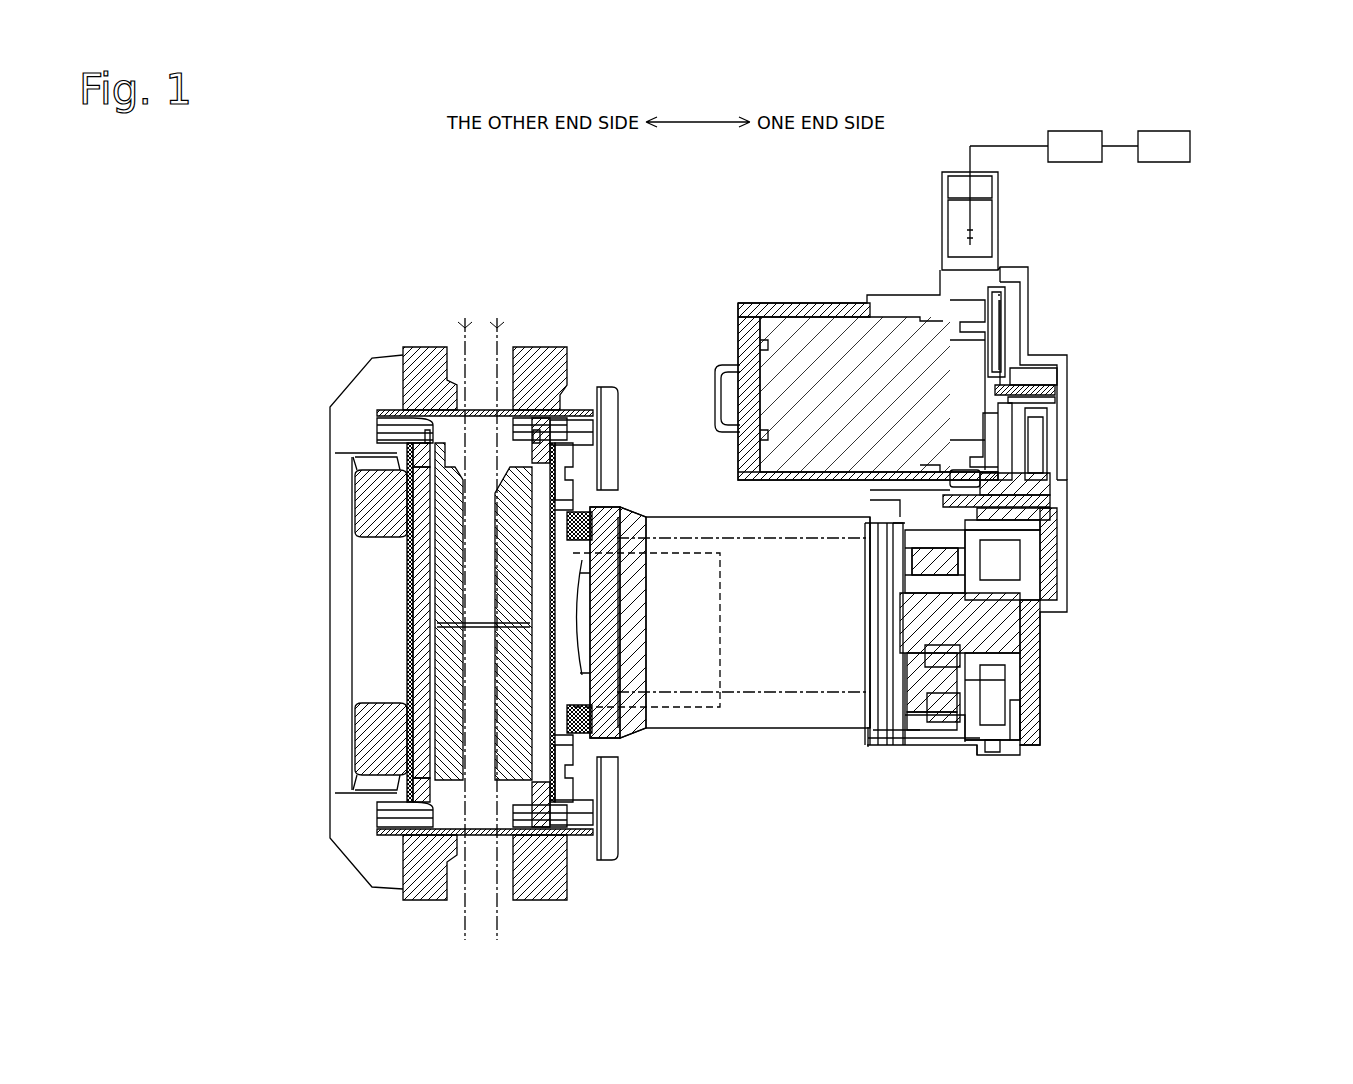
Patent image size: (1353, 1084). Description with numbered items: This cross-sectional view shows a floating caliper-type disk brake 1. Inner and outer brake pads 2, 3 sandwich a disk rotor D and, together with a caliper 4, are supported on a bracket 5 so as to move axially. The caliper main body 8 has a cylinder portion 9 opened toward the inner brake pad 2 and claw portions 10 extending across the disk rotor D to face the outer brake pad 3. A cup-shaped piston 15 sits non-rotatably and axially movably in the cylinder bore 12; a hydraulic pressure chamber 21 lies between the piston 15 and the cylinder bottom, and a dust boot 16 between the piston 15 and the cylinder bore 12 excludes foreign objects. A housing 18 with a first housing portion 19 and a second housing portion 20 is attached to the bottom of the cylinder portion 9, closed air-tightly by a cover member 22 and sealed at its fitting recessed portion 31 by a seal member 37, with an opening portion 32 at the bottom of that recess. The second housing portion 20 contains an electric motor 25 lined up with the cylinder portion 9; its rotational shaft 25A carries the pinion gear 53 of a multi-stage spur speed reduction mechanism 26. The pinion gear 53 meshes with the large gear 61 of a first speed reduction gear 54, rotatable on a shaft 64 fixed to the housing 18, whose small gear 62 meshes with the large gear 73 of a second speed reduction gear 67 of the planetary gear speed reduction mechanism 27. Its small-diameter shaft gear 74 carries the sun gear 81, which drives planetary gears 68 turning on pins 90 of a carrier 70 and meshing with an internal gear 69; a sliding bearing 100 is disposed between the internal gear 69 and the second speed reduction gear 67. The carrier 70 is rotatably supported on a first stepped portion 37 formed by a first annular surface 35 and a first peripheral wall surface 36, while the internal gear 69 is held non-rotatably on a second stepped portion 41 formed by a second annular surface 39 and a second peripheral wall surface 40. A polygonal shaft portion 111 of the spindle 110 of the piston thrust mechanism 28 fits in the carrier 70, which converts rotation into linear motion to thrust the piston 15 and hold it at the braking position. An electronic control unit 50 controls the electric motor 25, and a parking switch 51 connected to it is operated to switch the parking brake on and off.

The disk brake 1 is at (1213, 205).
The inner brake pad 2 is at (410, 652).
The outer brake pad 3 is at (435, 545).
The caliper 4 is at (700, 340).
The bracket 5 is at (343, 863).
The caliper main body 8 is at (690, 478).
The cylinder portion 9 is at (700, 730).
The claw portion 10 is at (355, 508).
The cylinder bore 12 is at (812, 730).
The piston 15 is at (676, 732).
The dust boot 16 is at (598, 740).
The housing 18 is at (930, 746).
The first housing portion 19 is at (945, 748).
The second housing portion 20 is at (757, 303).
The hydraulic pressure chamber 21 is at (752, 730).
The cover member 22 is at (1035, 318).
The electric motor 25 is at (799, 357).
The rotational shaft 25A is at (1060, 392).
The multi-stage spur speed reduction mechanism 26 is at (1062, 452).
The planetary gear speed reduction mechanism 27 is at (1042, 712).
The piston thrust mechanism 28 is at (776, 678).
The fitting recessed portion 31 is at (905, 746).
The opening portion 32 is at (860, 540).
The first annular surface 35 is at (863, 522).
The first peripheral wall surface 36 is at (886, 525).
The first stepped portion 37 is at (855, 240).
The second annular surface 39 is at (903, 522).
The second peripheral wall surface 40 is at (940, 522).
The second stepped portion 41 is at (925, 240).
The electronic control unit 50 is at (1075, 166).
The parking switch 51 is at (1162, 166).
The pinion gear 53 is at (1065, 360).
The first speed reduction gear 54 is at (1062, 487).
The large gear 61 is at (1066, 600).
The small gear 62 is at (1060, 515).
The shaft 64 is at (1053, 500).
The second speed reduction gear 67 is at (1030, 660).
The planetary gear 68 is at (1042, 738).
The internal gear 69 is at (968, 748).
The carrier 70 is at (915, 746).
The large gear 73 is at (1042, 530).
The small-diameter shaft gear 74 is at (1042, 640).
The sun gear 81 is at (1010, 615).
The pin 90 is at (862, 730).
The sliding bearing 100 is at (1008, 685).
The spindle 110 is at (836, 730).
The polygonal shaft portion 111 is at (857, 612).
The disk rotor D is at (500, 912).